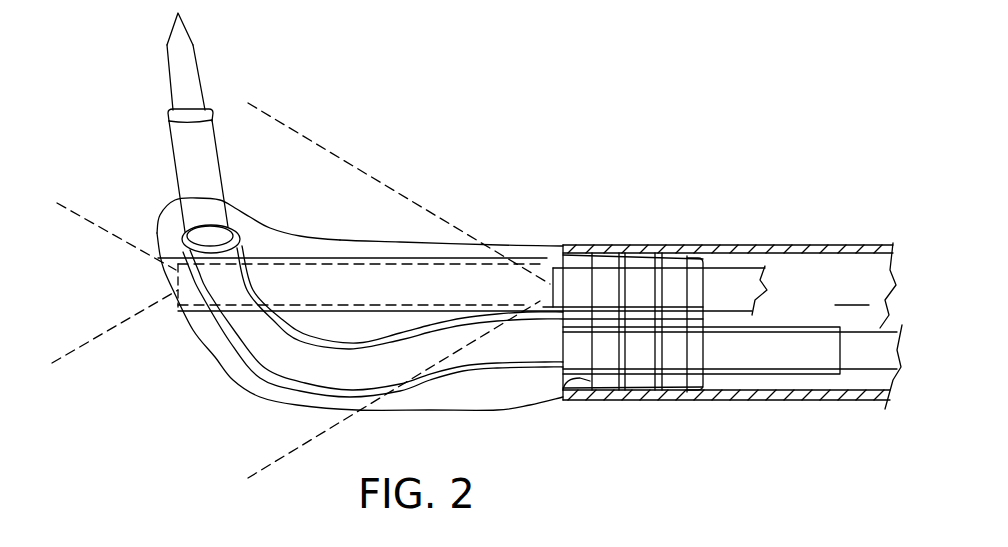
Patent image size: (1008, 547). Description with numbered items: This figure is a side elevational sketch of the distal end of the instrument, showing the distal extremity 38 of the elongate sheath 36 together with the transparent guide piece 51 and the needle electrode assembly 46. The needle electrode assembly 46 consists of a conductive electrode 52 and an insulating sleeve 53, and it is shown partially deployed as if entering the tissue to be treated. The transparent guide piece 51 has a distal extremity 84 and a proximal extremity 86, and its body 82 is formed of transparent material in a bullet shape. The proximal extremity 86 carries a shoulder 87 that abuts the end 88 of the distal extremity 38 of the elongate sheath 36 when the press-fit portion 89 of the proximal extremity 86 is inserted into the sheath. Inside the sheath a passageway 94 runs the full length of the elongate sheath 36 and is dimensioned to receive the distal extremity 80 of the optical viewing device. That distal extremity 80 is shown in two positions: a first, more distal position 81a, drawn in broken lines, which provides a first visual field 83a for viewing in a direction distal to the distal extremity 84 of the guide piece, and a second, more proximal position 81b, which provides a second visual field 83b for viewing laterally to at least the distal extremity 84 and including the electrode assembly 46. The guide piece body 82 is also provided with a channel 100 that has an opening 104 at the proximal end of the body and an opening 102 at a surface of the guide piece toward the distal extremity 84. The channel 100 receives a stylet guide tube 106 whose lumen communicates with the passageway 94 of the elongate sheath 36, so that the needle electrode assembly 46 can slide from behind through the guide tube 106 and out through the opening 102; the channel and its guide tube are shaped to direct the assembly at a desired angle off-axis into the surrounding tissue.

The conductive electrode 52 is at (170, 78).
The insulating sleeve 53 is at (174, 157).
The distal extremity of transparent guide piece 84 is at (160, 222).
The guide piece body 82 is at (463, 243).
The channel opening 102 is at (228, 228).
The channel 100 is at (248, 266).
The first more distal position 81a is at (178, 268).
The first visual field 83a is at (88, 343).
The second visual field 83b is at (348, 158).
The needle electrode assembly 46 is at (238, 132).
The transparent guide piece 51 is at (391, 201).
The second more proximal position 81b is at (553, 266).
The elongate sheath 36 is at (852, 247).
The passageway 94 is at (852, 292).
The distal extremity of optical viewing device 80 is at (728, 268).
The proximal extremity of transparent guide piece 86 is at (588, 248).
The distal extremity of elongate sheath 38 is at (627, 248).
The press-fit portion 89 is at (610, 355).
The shoulder 87 is at (590, 395).
The channel opening at proximal end 104 is at (712, 380).
The stylet guide tube 106 is at (800, 373).
The end of distal extremity of elongate sheath 88 is at (555, 398).